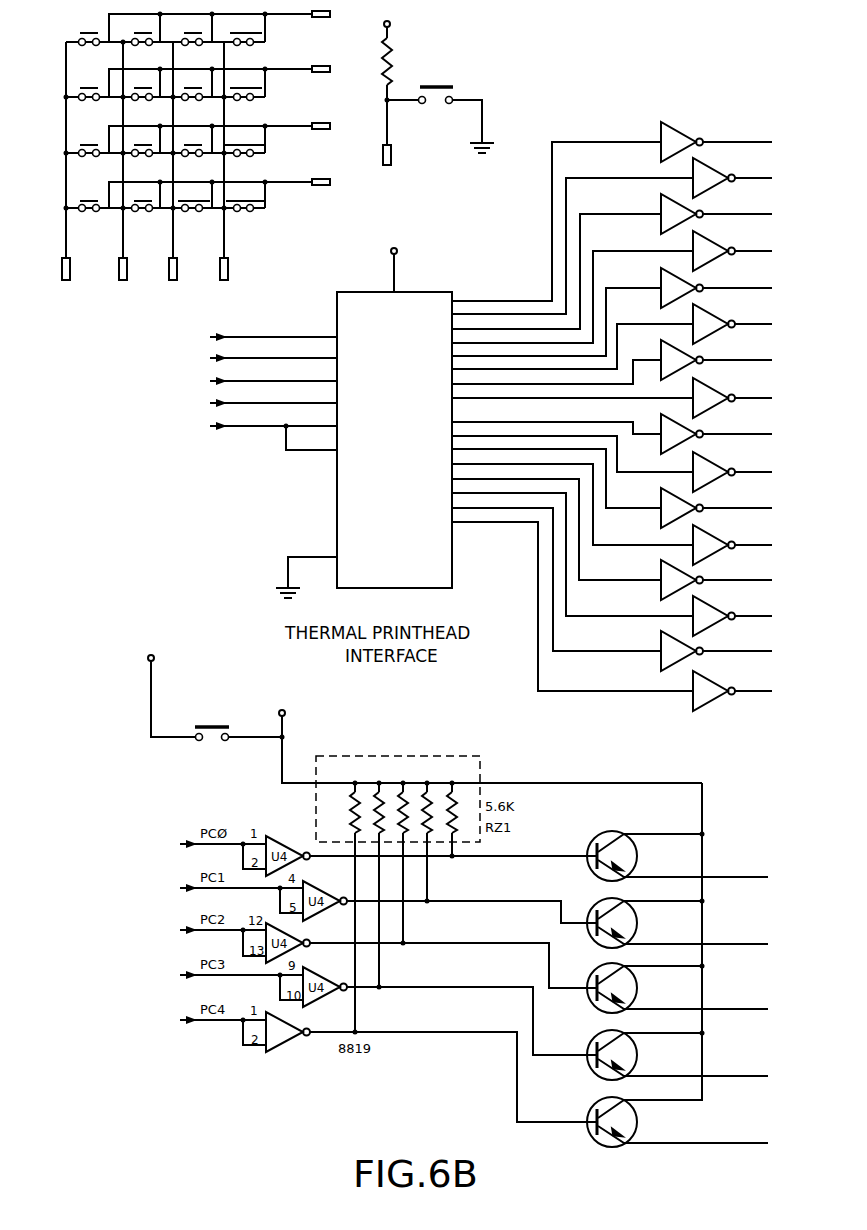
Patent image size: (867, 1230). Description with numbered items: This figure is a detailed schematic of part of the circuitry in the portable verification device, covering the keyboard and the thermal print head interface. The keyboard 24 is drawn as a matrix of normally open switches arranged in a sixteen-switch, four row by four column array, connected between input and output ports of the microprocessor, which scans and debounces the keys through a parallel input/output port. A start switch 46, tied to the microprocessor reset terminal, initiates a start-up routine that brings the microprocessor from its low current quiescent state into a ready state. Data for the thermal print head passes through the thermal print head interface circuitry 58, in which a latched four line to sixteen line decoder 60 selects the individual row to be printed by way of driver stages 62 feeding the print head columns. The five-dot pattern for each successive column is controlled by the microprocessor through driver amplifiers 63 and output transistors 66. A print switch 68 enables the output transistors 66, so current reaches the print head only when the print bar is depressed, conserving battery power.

The keyboard 24 is at (307, 227).
The start switch 46 is at (489, 86).
The thermal print head interface circuitry 58 is at (279, 554).
The decoder 60 is at (452, 548).
The driver stages 62 is at (527, 655).
The driver amplifiers 63 is at (281, 1064).
The output transistors 66 is at (559, 1131).
The print switch 68 is at (212, 749).